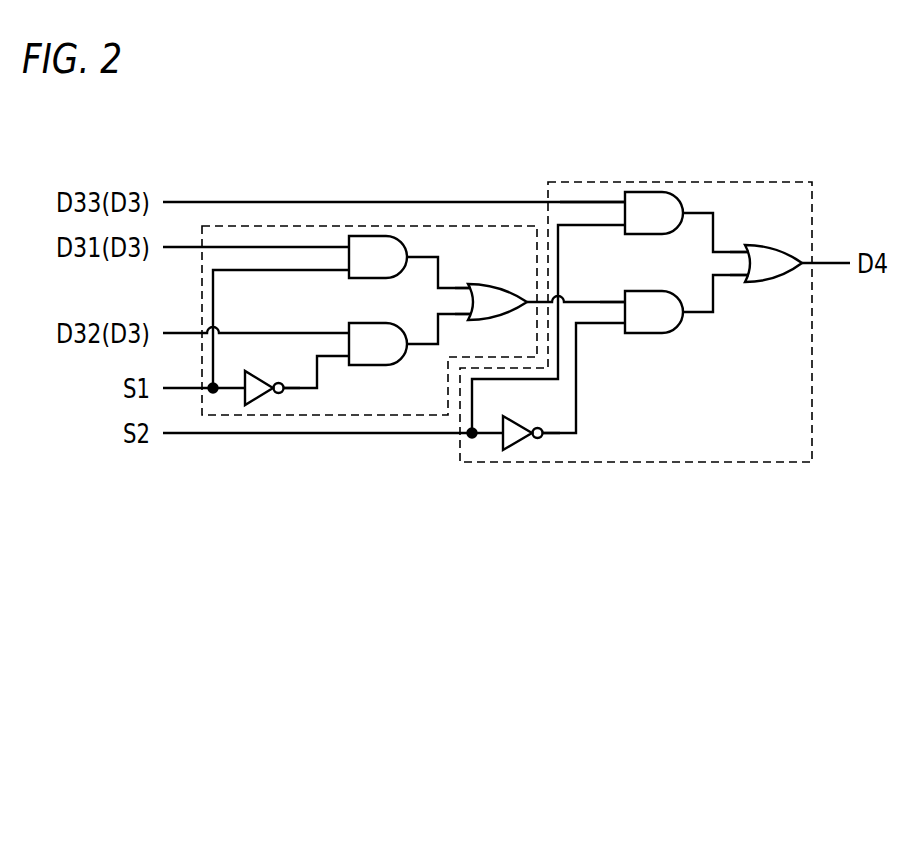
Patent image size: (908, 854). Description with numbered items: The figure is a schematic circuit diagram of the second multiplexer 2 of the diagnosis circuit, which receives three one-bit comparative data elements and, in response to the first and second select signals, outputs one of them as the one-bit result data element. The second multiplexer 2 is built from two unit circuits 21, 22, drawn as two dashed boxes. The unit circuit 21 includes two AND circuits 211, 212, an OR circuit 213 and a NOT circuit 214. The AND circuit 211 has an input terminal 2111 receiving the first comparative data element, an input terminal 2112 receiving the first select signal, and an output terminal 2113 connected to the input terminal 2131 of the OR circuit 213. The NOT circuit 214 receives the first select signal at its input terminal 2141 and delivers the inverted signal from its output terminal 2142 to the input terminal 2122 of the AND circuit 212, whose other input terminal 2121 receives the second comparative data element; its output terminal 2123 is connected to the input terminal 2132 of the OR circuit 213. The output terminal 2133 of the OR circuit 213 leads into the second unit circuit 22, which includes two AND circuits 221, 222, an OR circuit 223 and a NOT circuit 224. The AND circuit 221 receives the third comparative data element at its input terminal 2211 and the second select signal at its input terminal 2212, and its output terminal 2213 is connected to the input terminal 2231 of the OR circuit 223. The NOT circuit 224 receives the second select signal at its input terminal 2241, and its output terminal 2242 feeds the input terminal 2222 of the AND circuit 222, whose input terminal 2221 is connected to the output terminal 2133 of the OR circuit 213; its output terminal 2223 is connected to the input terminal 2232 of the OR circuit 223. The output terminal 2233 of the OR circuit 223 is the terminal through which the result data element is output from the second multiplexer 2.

The second multiplexer 2 is at (786, 167).
The unit circuit 21 is at (250, 226).
The unit circuit 22 is at (813, 193).
The AND circuit 211 is at (368, 276).
The input terminal 2111 is at (347, 240).
The input terminal 2112 is at (348, 271).
The output terminal 2113 is at (407, 257).
The AND circuit 212 is at (377, 327).
The input terminal 2121 is at (347, 333).
The input terminal 2122 is at (348, 357).
The output terminal 2123 is at (405, 345).
The OR circuit 213 is at (487, 292).
The input terminal 2131 is at (468, 288).
The input terminal 2132 is at (467, 318).
The output terminal 2133 is at (527, 302).
The NOT circuit 214 is at (258, 396).
The input terminal 2141 is at (245, 400).
The output terminal 2142 is at (285, 383).
The AND circuit 221 is at (652, 197).
The input terminal 2211 is at (622, 200).
The input terminal 2212 is at (622, 225).
The output terminal 2213 is at (683, 213).
The AND circuit 222 is at (653, 293).
The input terminal 2221 is at (623, 296).
The input terminal 2222 is at (623, 328).
The output terminal 2223 is at (683, 315).
The OR circuit 223 is at (775, 253).
The input terminal 2231 is at (745, 247).
The input terminal 2232 is at (742, 281).
The output terminal 2233 is at (803, 267).
The NOT circuit 224 is at (518, 426).
The input terminal 2241 is at (503, 442).
The output terminal 2242 is at (543, 433).